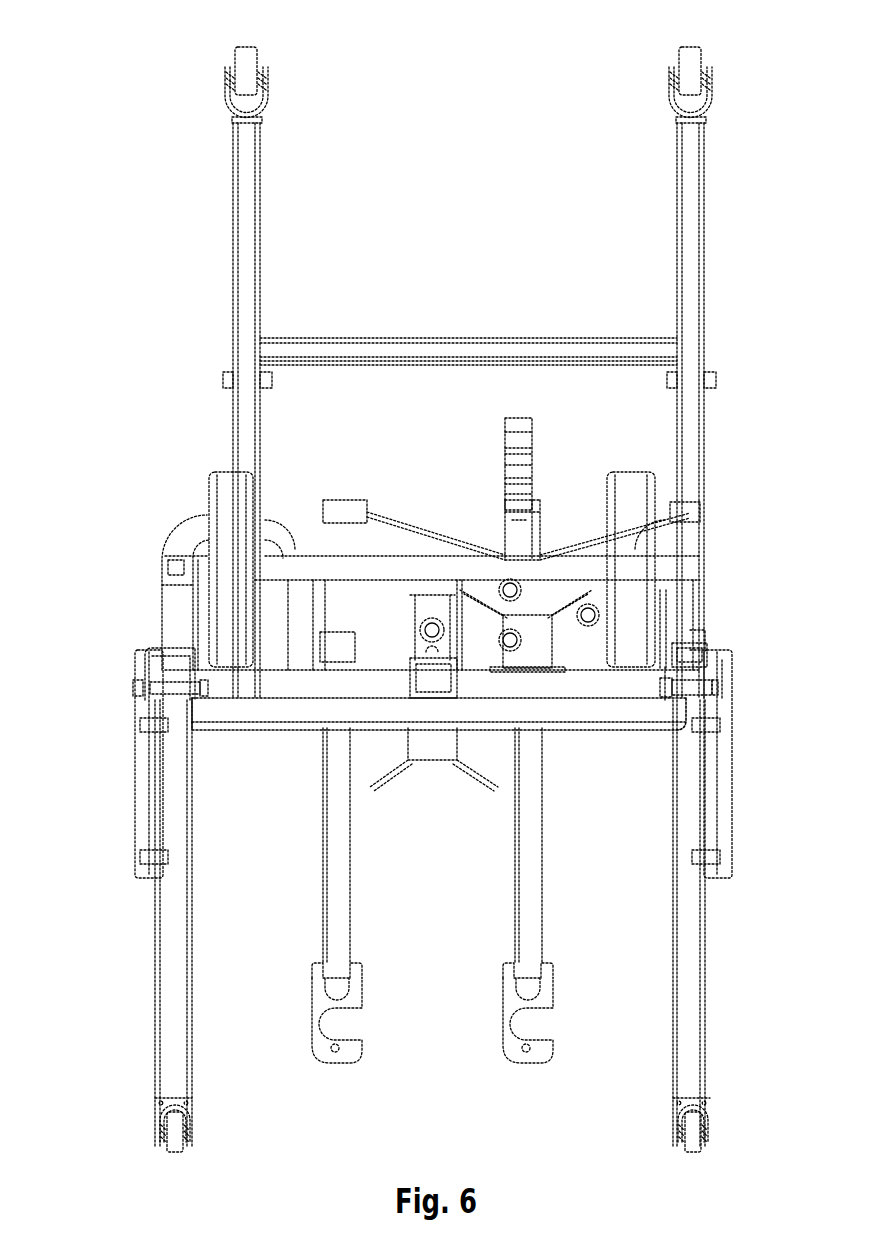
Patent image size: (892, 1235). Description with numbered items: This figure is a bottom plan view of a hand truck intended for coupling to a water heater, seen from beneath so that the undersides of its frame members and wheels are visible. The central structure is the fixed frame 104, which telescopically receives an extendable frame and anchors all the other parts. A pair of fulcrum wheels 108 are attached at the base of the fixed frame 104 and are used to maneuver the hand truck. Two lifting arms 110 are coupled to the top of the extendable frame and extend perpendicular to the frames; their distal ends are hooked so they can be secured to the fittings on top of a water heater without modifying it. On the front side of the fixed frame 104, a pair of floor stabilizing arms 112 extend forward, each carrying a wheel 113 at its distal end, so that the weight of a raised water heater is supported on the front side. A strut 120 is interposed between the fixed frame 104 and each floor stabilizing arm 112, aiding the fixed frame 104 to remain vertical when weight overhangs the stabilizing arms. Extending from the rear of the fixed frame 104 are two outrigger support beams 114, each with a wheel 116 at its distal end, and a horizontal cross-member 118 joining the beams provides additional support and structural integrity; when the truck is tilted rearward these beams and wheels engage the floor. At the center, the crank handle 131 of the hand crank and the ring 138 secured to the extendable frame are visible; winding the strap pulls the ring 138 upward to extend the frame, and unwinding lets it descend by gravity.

The fixed frame 104 is at (175, 689).
The fulcrum wheels 108 is at (227, 509).
The lifting arms 110 is at (333, 918).
The floor stabilizing arm 112 is at (172, 1050).
The wheel 113 is at (172, 1130).
The outrigger support beam 114 is at (246, 218).
The wheel 116 is at (247, 58).
The horizontal cross-member 118 is at (400, 346).
The strut 120 is at (138, 800).
The crank handle 131 is at (525, 442).
The ring 138 is at (418, 636).